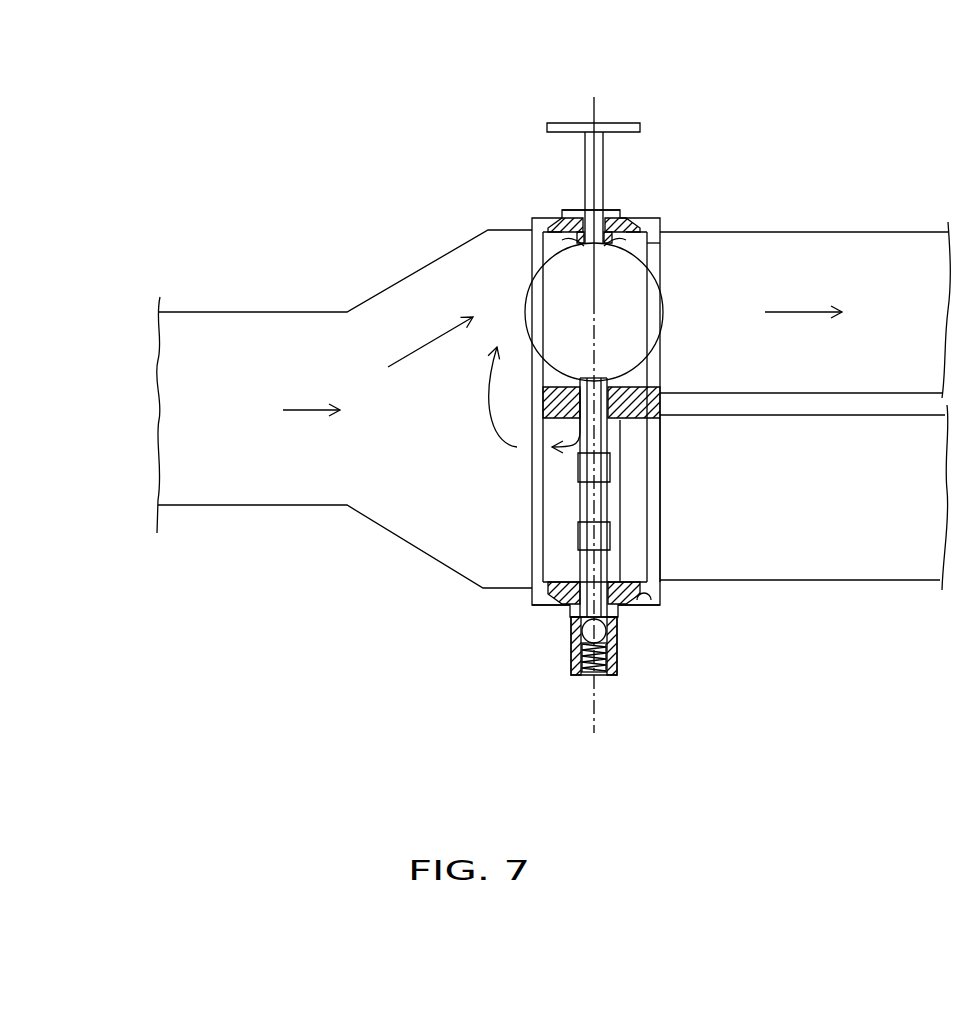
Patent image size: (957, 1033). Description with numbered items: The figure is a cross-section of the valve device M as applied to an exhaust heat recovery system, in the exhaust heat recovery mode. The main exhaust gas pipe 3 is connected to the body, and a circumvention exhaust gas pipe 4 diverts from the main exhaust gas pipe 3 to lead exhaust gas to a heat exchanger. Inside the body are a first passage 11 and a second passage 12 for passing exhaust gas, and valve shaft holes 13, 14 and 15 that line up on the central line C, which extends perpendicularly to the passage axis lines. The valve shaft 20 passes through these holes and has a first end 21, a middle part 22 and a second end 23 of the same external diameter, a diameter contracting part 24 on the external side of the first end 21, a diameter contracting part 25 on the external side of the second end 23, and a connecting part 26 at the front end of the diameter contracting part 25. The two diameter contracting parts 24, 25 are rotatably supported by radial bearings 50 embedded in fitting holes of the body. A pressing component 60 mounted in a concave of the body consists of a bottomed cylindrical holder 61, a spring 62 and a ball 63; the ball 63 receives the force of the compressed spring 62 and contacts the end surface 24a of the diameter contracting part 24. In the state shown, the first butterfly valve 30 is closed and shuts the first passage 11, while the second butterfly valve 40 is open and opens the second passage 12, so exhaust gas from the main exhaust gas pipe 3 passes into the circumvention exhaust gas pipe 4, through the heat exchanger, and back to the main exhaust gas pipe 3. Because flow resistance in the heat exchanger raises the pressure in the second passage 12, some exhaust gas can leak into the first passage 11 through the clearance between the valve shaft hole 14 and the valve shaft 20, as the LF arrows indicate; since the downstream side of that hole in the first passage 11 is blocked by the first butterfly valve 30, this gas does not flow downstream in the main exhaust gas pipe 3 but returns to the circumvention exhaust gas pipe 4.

The main exhaust gas pipe 3 is at (273, 305).
The circumvention exhaust gas pipe 4 is at (880, 230).
The first passage 11 is at (648, 584).
The second passage 12 is at (660, 247).
The valve shaft hole 13 is at (566, 603).
The valve shaft hole 14 is at (652, 410).
The valve shaft hole 15 is at (578, 240).
The valve shaft 20 is at (580, 165).
The first end 21 is at (557, 583).
The middle part 22 is at (612, 422).
The second end 23 is at (612, 232).
The diameter contracting part 24 is at (604, 606).
The end surface 24a is at (610, 640).
The diameter contracting part 25 is at (604, 150).
The connecting part 26 is at (617, 122).
The first butterfly valve 30 is at (662, 525).
The second butterfly valve 40 is at (663, 295).
The bearing 50 is at (578, 206).
The pressing component 60 is at (712, 700).
The cylindrical holder 61 is at (602, 650).
The spring 62 is at (590, 673).
The ball 63 is at (614, 672).
The valve device M is at (624, 195).
The central line C is at (592, 725).